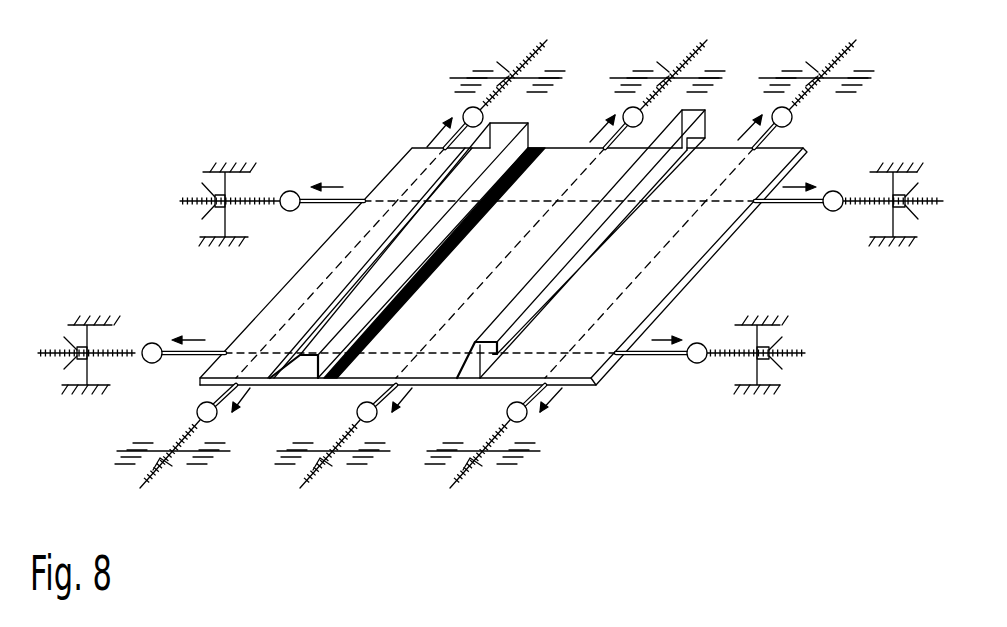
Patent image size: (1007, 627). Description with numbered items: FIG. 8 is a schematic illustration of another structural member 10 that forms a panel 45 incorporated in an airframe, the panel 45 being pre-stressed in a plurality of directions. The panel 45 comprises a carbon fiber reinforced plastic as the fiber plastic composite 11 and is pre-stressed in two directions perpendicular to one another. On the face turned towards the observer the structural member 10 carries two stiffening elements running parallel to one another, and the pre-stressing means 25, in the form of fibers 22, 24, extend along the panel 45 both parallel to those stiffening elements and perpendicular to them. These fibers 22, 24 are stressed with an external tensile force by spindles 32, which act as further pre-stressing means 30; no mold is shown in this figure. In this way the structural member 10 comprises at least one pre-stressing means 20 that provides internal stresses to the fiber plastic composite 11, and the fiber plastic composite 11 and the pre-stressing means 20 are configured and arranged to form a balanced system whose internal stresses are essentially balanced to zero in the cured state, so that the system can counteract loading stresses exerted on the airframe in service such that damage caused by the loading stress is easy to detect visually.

The structural member 10 is at (524, 320).
The fiber plastic composite 11 is at (280, 310).
The pre-stressing means 20 is at (490, 291).
The fiber 22 is at (516, 262).
The fiber 24 is at (530, 215).
The pre-stressing means 25 is at (614, 380).
The pre-stressing means 30 is at (824, 344).
The spindle 32 is at (170, 467).
The panel 45 is at (778, 160).